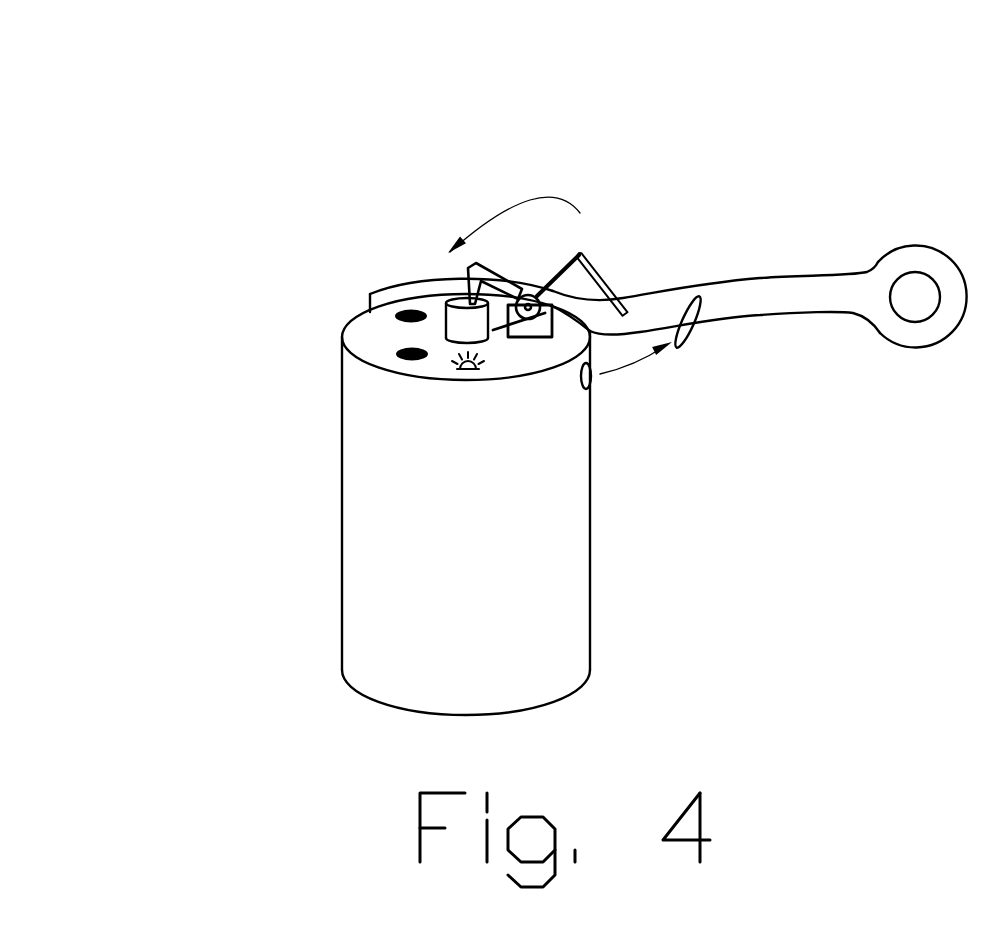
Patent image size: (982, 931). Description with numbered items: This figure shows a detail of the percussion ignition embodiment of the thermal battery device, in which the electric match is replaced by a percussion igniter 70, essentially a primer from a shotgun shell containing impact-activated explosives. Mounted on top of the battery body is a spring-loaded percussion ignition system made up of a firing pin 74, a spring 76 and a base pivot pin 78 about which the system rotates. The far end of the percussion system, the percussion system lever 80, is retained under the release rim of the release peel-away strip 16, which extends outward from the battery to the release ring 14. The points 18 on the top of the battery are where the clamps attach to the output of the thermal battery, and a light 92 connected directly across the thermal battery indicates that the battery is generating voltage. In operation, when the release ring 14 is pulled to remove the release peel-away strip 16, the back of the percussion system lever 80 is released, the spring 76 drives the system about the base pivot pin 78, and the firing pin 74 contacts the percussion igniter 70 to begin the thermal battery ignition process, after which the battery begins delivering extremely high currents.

The release ring 14 is at (887, 364).
The release peel-away strip 16 is at (754, 219).
The attachment points 18 is at (386, 362).
The percussion igniter 70 is at (361, 426).
The firing pin 74 is at (398, 245).
The spring 76 is at (605, 429).
The base pivot pin 78 is at (467, 195).
The percussion system lever 80 is at (655, 171).
The light 92 is at (581, 493).